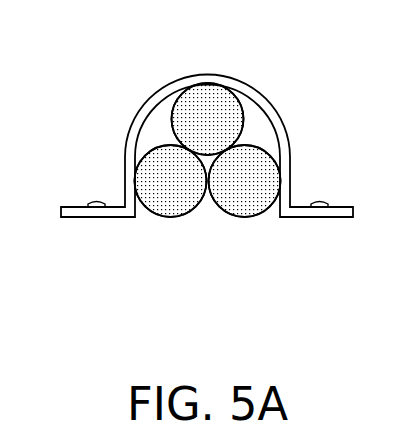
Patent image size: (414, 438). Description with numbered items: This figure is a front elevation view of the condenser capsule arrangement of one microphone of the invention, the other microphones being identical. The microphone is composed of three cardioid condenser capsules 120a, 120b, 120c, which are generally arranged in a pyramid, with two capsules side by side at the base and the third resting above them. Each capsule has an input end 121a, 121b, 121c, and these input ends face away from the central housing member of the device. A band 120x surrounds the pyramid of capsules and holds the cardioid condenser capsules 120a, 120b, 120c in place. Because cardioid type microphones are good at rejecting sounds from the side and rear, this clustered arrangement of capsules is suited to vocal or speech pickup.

The band 120x is at (143, 110).
The cardioid condenser capsule 120a is at (155, 179).
The cardioid condenser capsule 120b is at (192, 108).
The cardioid condenser capsule 120c is at (263, 172).
The input end 121a is at (169, 198).
The input end 121b is at (217, 107).
The input end 121c is at (247, 192).